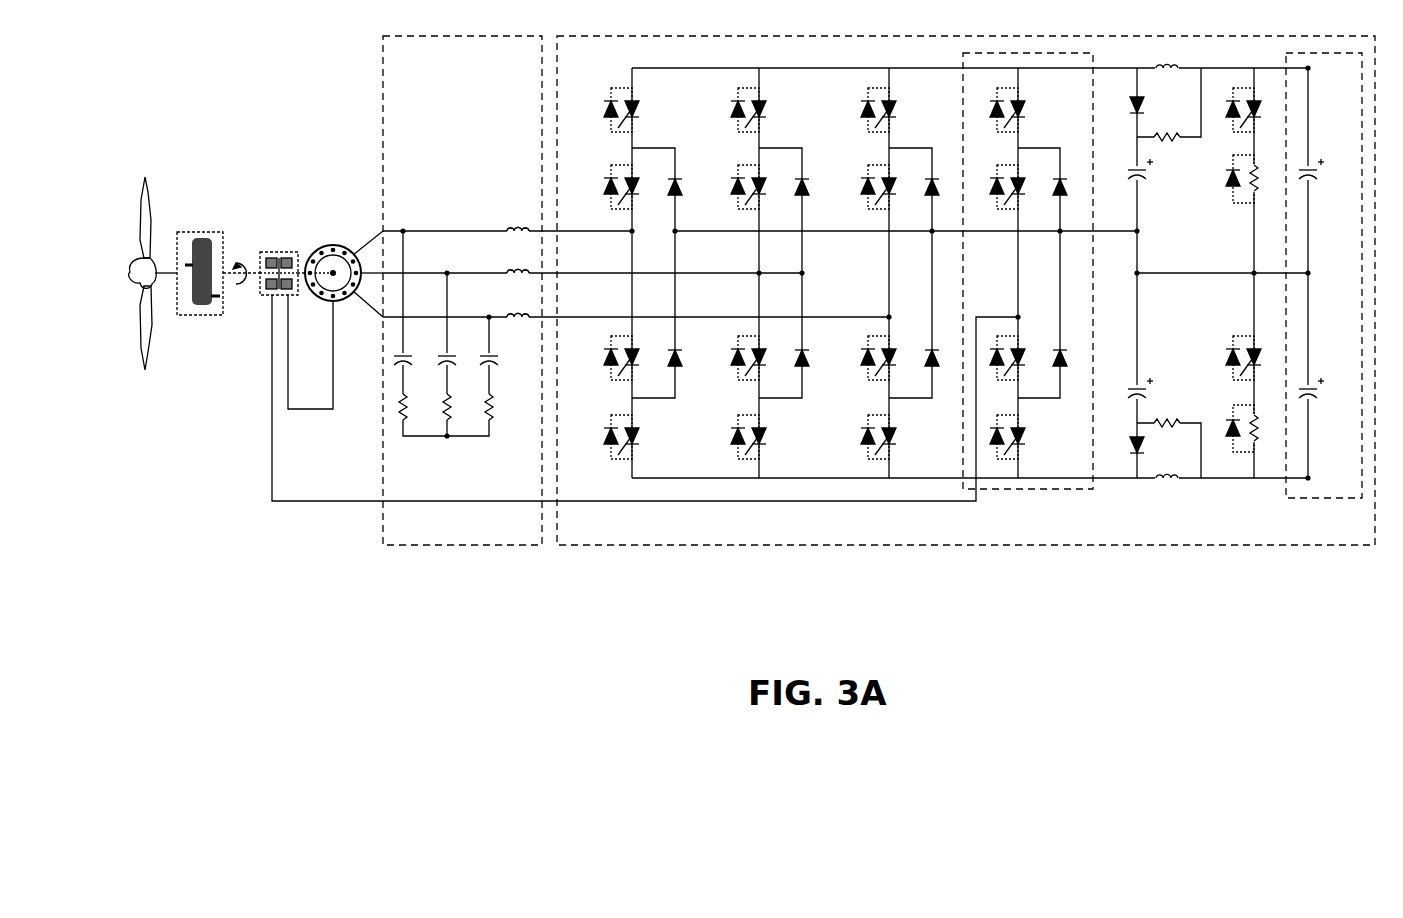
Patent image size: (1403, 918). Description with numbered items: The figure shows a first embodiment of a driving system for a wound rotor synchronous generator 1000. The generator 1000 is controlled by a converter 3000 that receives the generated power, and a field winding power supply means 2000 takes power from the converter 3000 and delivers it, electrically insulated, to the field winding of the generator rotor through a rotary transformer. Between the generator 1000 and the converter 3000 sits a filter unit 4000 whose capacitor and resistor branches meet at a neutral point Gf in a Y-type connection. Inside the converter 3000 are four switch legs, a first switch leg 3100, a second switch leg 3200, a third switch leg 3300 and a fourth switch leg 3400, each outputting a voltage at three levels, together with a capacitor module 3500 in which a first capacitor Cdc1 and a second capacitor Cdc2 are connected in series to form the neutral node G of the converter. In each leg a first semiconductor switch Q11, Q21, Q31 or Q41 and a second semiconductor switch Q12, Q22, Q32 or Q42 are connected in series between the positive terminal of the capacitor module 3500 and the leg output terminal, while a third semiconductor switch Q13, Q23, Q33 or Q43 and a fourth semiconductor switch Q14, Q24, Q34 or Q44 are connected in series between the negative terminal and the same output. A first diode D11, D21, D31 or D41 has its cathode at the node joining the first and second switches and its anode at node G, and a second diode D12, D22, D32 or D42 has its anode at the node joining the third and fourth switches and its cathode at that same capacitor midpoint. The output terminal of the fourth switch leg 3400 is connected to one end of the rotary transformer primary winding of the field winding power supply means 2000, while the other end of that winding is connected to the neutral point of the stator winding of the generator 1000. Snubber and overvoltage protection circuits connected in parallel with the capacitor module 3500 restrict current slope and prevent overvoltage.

The wound rotor synchronous generator 1000 is at (335, 245).
The field winding power supply means 2000 is at (275, 245).
The converter 3000 is at (600, 545).
The first switch leg 3100 is at (651, 517).
The second switch leg 3200 is at (772, 518).
The third switch leg 3300 is at (890, 518).
The fourth switch leg 3400 is at (1030, 489).
The capacitor module 3500 is at (1330, 498).
The filter unit 4000 is at (437, 545).
The neutral point of filter unit Gf is at (446, 351).
The first semiconductor switch Q11 is at (602, 110).
The second semiconductor switch Q12 is at (602, 187).
The third semiconductor switch Q13 is at (602, 358).
The fourth semiconductor switch Q14 is at (602, 437).
The first semiconductor switch Q21 is at (731, 110).
The second semiconductor switch Q22 is at (731, 187).
The third semiconductor switch Q23 is at (731, 358).
The fourth semiconductor switch Q24 is at (731, 437).
The first semiconductor switch Q31 is at (861, 110).
The second semiconductor switch Q32 is at (861, 187).
The third semiconductor switch Q33 is at (861, 358).
The fourth semiconductor switch Q34 is at (861, 437).
The first semiconductor switch Q41 is at (990, 110).
The second semiconductor switch Q42 is at (990, 187).
The third semiconductor switch Q43 is at (990, 358).
The fourth semiconductor switch Q44 is at (990, 437).
The first diode D11 is at (690, 171).
The second diode D12 is at (690, 371).
The first diode D21 is at (817, 171).
The second diode D22 is at (817, 371).
The first diode D31 is at (947, 171).
The second diode D32 is at (947, 371).
The first diode D41 is at (1076, 171).
The second diode D42 is at (1076, 371).
The first capacitor Cdc1 is at (1326, 181).
The second capacitor Cdc2 is at (1326, 400).